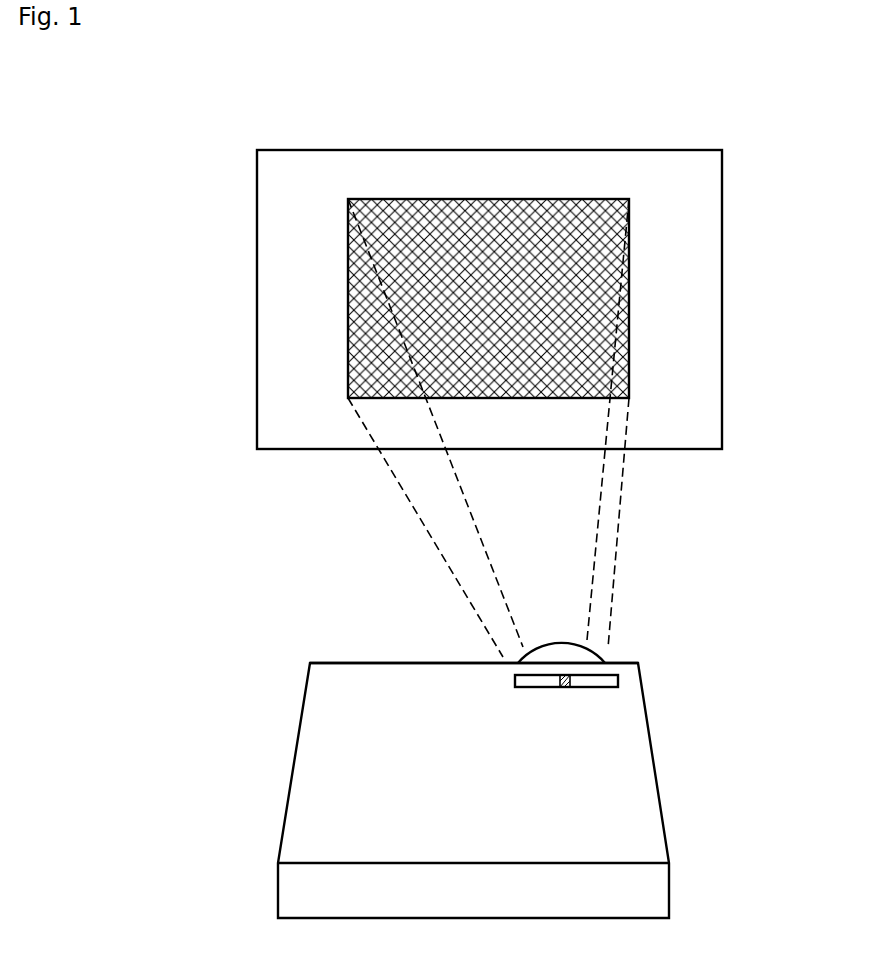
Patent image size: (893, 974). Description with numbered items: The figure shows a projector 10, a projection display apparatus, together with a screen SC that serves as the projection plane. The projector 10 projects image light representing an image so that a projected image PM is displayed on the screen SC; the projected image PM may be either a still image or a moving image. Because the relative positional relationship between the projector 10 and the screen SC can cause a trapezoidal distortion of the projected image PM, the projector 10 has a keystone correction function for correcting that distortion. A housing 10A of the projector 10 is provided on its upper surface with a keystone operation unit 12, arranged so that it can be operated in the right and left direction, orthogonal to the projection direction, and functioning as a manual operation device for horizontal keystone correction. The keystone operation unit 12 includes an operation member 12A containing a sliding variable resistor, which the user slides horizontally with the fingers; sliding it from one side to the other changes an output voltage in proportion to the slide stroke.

The screen SC is at (660, 150).
The projected image PM is at (570, 199).
The projector 10 is at (648, 708).
The housing 10A is at (638, 765).
The keystone operation unit 12 is at (512, 690).
The operation member 12A is at (565, 688).